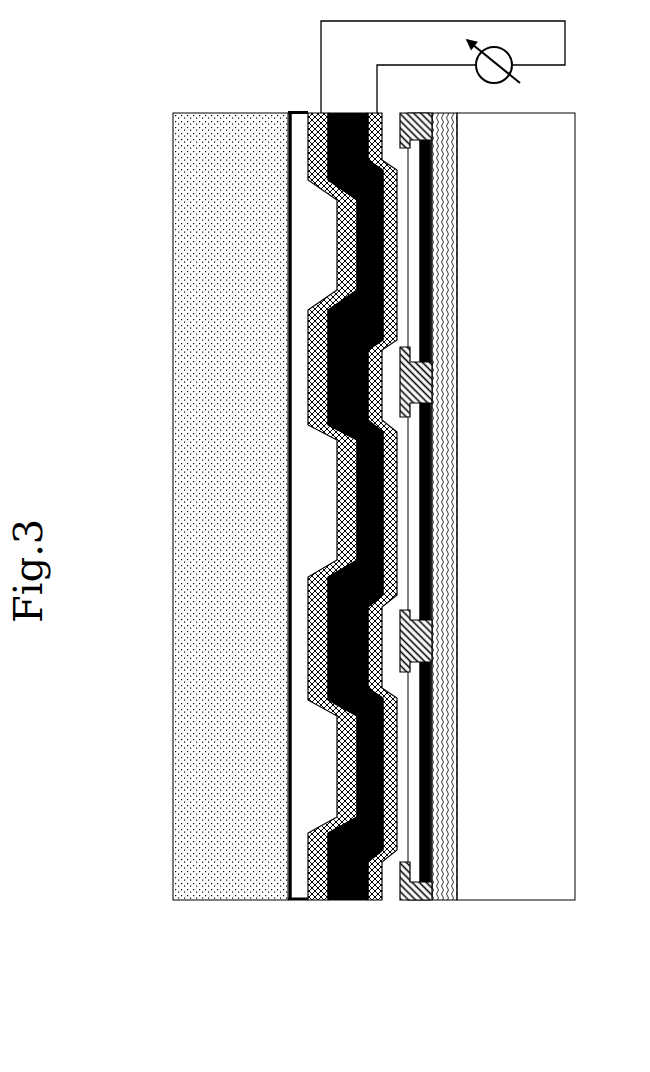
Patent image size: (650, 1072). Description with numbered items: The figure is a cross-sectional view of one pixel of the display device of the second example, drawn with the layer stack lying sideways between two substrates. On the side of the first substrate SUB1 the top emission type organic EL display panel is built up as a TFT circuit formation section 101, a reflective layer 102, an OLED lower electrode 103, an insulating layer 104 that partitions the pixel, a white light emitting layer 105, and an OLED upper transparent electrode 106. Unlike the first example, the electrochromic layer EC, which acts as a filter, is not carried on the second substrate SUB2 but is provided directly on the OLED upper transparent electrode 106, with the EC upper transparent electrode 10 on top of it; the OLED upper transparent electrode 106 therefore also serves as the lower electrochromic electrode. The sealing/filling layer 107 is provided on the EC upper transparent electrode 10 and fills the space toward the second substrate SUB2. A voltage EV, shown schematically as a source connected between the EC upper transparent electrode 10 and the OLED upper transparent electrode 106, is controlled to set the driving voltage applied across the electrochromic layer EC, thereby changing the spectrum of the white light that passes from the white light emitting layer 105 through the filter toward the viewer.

The EC upper transparent electrode 10 is at (246, 565).
The TFT circuit formation section 101 is at (443, 738).
The reflective layer 102 is at (433, 807).
The OLED lower electrode 103 is at (428, 858).
The insulating layer 104 is at (415, 880).
The white light emitting layer 105 is at (405, 853).
The OLED upper transparent electrode 106 is at (395, 592).
The sealing/filling layer 107 is at (310, 851).
The electrochromic layer EC is at (355, 868).
The voltage EV is at (480, 75).
The first substrate SUB1 is at (547, 868).
The second substrate SUB2 is at (185, 875).